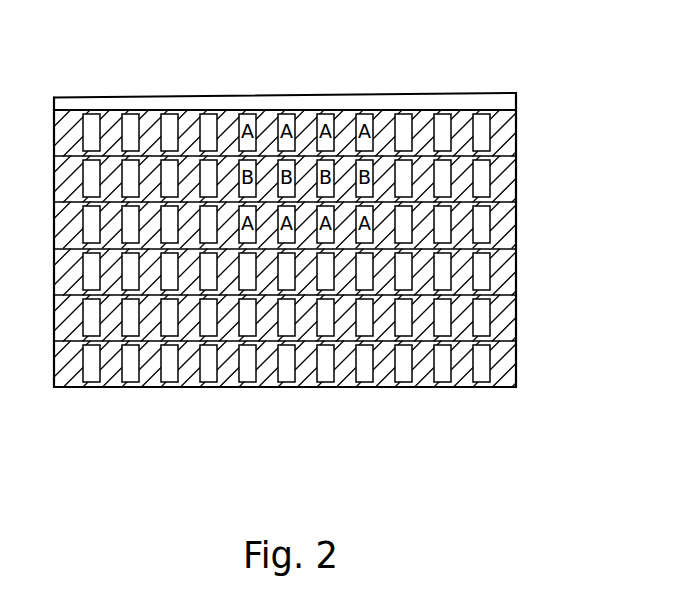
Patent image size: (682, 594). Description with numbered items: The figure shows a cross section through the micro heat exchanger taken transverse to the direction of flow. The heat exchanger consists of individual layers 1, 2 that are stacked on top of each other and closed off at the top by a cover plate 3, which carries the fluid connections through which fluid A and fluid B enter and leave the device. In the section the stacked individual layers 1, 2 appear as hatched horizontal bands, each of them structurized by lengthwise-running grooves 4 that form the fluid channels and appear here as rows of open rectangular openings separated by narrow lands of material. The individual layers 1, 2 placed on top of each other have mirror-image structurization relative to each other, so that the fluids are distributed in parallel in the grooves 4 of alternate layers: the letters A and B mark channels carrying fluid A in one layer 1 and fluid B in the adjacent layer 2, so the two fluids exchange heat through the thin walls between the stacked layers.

The individual layer 1 is at (523, 203).
The individual layer 2 is at (523, 168).
The cover plate 3 is at (497, 102).
The grooves 4 is at (241, 125).